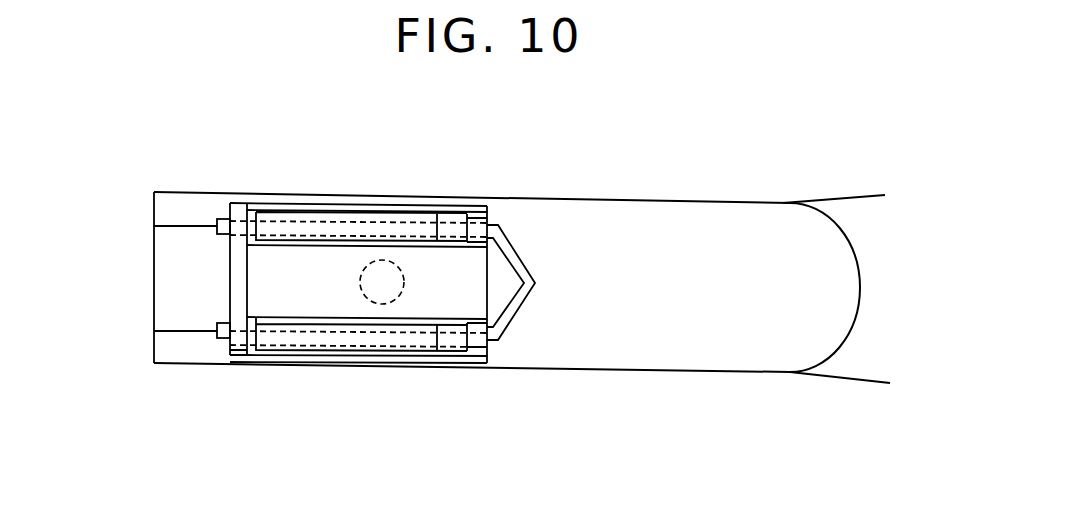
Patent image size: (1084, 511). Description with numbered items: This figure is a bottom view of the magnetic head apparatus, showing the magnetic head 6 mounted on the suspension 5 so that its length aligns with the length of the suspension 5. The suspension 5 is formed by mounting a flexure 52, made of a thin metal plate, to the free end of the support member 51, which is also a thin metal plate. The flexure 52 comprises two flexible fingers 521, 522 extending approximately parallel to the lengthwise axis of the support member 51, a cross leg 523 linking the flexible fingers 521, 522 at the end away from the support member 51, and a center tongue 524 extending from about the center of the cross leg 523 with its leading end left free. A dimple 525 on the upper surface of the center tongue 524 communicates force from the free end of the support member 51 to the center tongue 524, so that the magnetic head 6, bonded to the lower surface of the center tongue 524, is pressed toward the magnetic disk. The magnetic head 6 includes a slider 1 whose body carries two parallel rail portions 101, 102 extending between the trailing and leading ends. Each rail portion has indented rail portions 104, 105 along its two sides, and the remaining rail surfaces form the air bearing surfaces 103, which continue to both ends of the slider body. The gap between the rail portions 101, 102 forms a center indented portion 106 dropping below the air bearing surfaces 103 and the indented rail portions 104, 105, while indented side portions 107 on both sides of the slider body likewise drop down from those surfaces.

The slider 1 is at (492, 316).
The suspension 5 is at (710, 380).
The magnetic head 6 is at (320, 388).
The support member 51 is at (828, 200).
The flexure 52 is at (522, 239).
The rail portion 101 is at (490, 206).
The rail portion 102 is at (490, 361).
The air bearing surfaces 103 is at (302, 224).
The indented rail portion 104 is at (267, 215).
The indented rail portion 105 is at (443, 240).
The center indented portion 106 is at (470, 267).
The indented side portions 107 is at (358, 204).
The flexible finger 521 is at (222, 212).
The flexible finger 522 is at (227, 341).
The cross leg 523 is at (168, 313).
The center tongue 524 is at (495, 295).
The dimple 525 is at (360, 277).